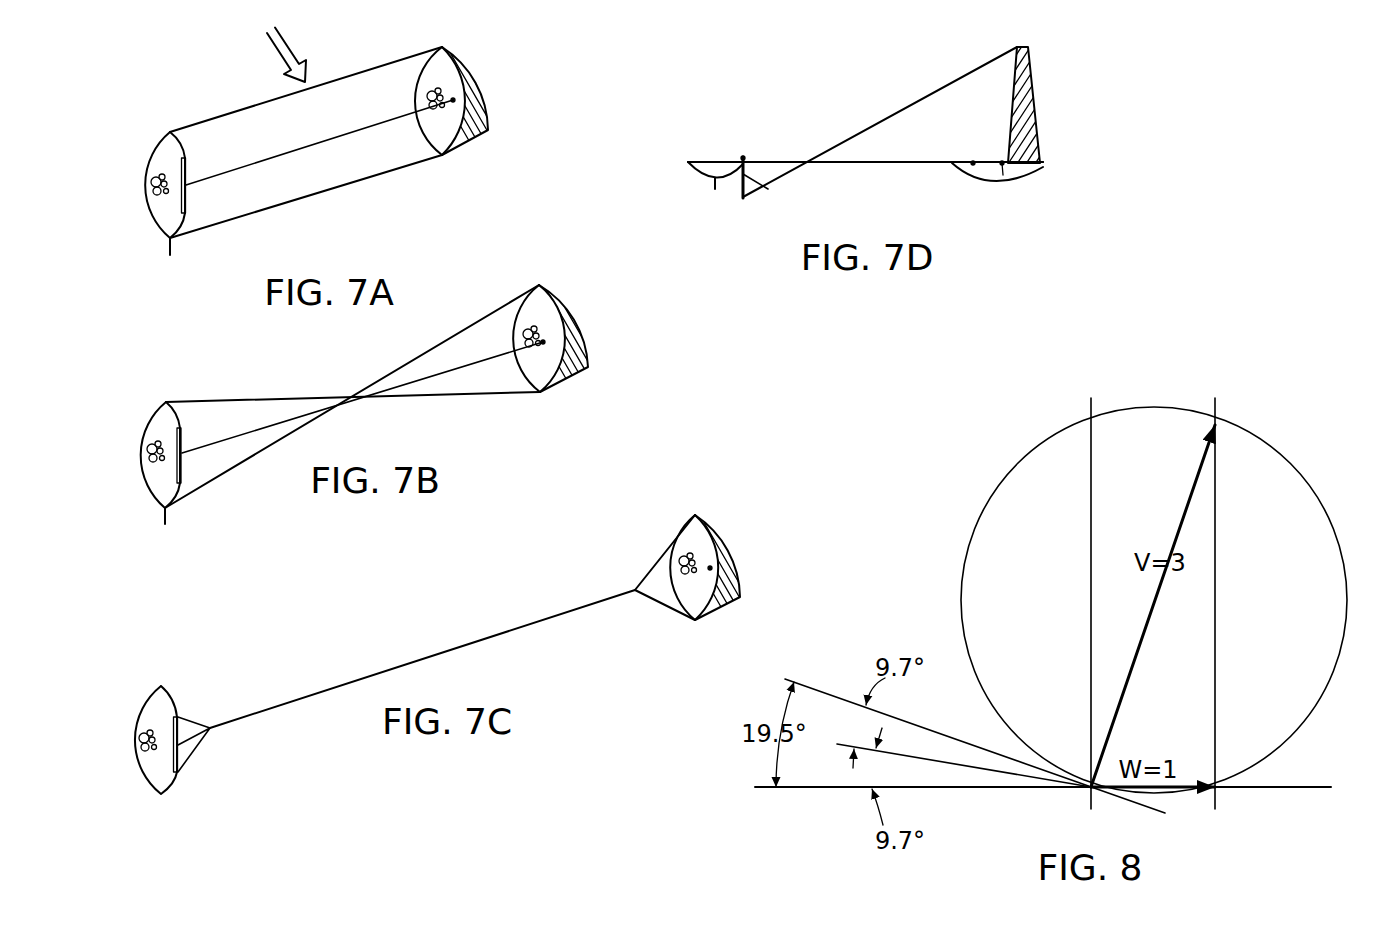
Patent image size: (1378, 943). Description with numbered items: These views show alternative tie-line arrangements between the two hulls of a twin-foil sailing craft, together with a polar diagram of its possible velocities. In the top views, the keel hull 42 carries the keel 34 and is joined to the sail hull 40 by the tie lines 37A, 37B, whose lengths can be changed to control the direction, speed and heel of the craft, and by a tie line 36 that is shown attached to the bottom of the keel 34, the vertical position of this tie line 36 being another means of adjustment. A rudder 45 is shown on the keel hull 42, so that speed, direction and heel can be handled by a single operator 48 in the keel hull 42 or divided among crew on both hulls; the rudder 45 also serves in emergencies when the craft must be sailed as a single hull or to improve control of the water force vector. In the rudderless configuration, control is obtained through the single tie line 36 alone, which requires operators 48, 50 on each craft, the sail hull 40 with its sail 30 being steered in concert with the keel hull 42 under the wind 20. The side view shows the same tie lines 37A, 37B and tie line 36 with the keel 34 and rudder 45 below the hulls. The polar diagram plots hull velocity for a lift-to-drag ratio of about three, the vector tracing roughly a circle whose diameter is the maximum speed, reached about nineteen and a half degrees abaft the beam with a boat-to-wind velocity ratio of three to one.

In FIG. 7A, the incident light beam 20 is at (281, 42).
In FIG. 7A, the concave mirror 30 is at (453, 98).
In FIG. 7B, the concave mirror 30 is at (563, 327).
In FIG. 7C, the concave mirror 30 is at (716, 545).
In FIG. 7D, the concave mirror 30 is at (1032, 83).
In FIG. 7A, the keel 34 is at (190, 168).
In FIG. 7B, the keel 34 is at (185, 443).
In FIG. 7C, the keel 34 is at (190, 752).
In FIG. 7D, the keel 34 is at (758, 186).
In FIG. 7A, the tie line 36 is at (312, 143).
In FIG. 7B, the tie line 36 is at (447, 373).
In FIG. 7C, the tie line 36 is at (416, 660).
In FIG. 7D, the tie line 36 is at (878, 122).
In FIG. 7A, the tie line 37A is at (233, 112).
In FIG. 7B, the tie line 37A is at (210, 397).
In FIG. 7D, the tie line 37A is at (875, 165).
In FIG. 7A, the tie line 37B is at (363, 178).
In FIG. 7B, the tie line 37B is at (253, 463).
In FIG. 7D, the tie line 37B is at (865, 186).
In FIG. 7A, the second lens 40 is at (447, 132).
In FIG. 7B, the second lens 40 is at (541, 375).
In FIG. 7C, the second lens 40 is at (690, 605).
In FIG. 7D, the second lens 40 is at (1017, 172).
In FIG. 7A, the keel hull 42 is at (163, 153).
In FIG. 7B, the keel hull 42 is at (155, 490).
In FIG. 7C, the keel hull 42 is at (150, 772).
In FIG. 7D, the keel hull 42 is at (713, 160).
In FIG. 7A, the rudder 45 is at (172, 250).
In FIG. 7B, the rudder 45 is at (167, 520).
In FIG. 7D, the rudder 45 is at (712, 182).
In FIG. 7A, the operator 48 is at (155, 198).
In FIG. 7B, the operator 48 is at (142, 445).
In FIG. 7C, the operator 48 is at (145, 728).
In FIG. 7C, the operator 50 is at (670, 545).